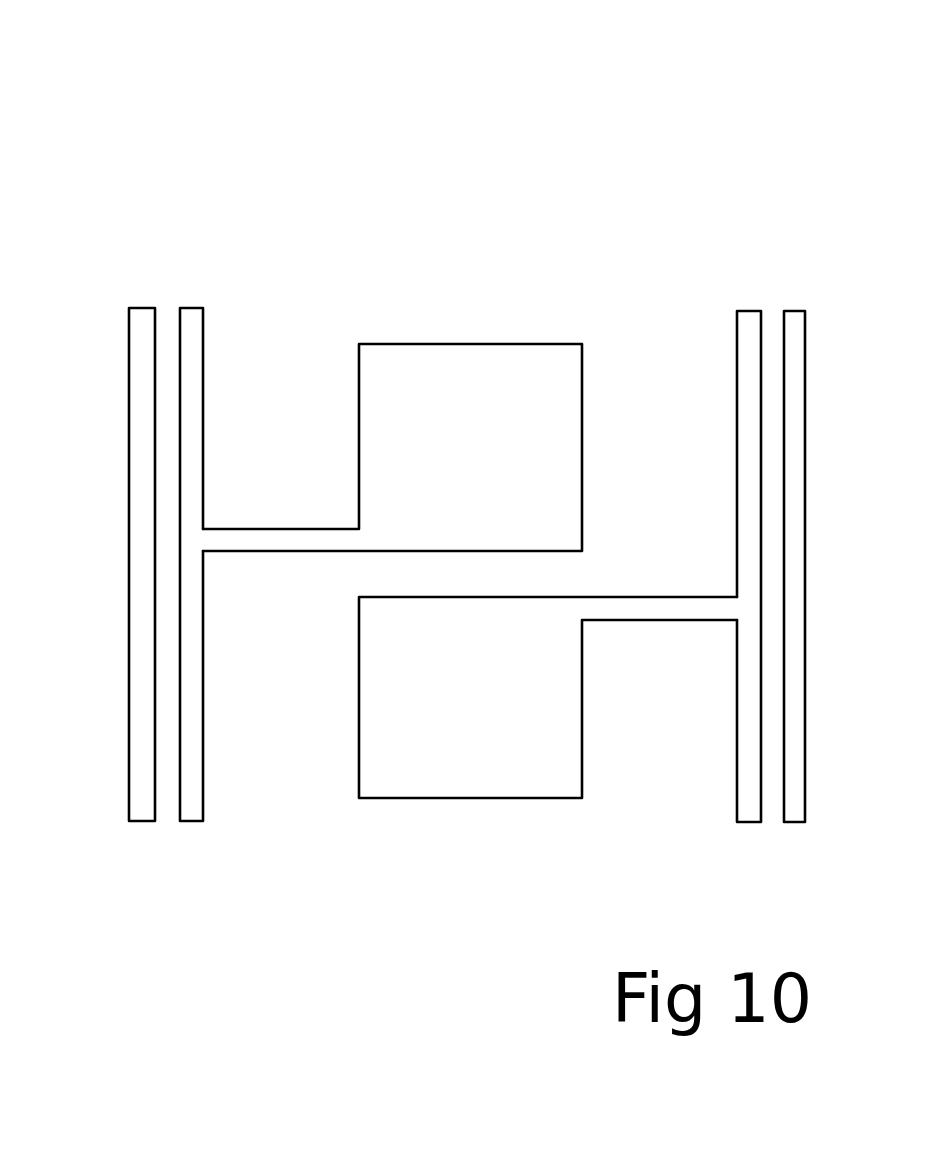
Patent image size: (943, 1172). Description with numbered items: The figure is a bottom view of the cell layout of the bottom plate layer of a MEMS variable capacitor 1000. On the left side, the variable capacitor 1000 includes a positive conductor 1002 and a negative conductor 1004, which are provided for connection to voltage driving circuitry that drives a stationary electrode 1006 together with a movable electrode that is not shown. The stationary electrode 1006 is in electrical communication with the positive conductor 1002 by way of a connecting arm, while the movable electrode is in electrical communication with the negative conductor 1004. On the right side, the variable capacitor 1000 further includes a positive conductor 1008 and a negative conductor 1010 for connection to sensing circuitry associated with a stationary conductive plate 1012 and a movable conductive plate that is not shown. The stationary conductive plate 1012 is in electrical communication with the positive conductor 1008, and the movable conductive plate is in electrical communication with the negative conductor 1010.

The MEMS variable capacitor 1000 is at (727, 115).
The positive conductor 1002 is at (192, 305).
The negative conductor 1004 is at (140, 305).
The stationary electrode 1006 is at (438, 344).
The positive conductor 1008 is at (743, 308).
The negative conductor 1010 is at (788, 308).
The stationary conductive plate 1012 is at (477, 798).